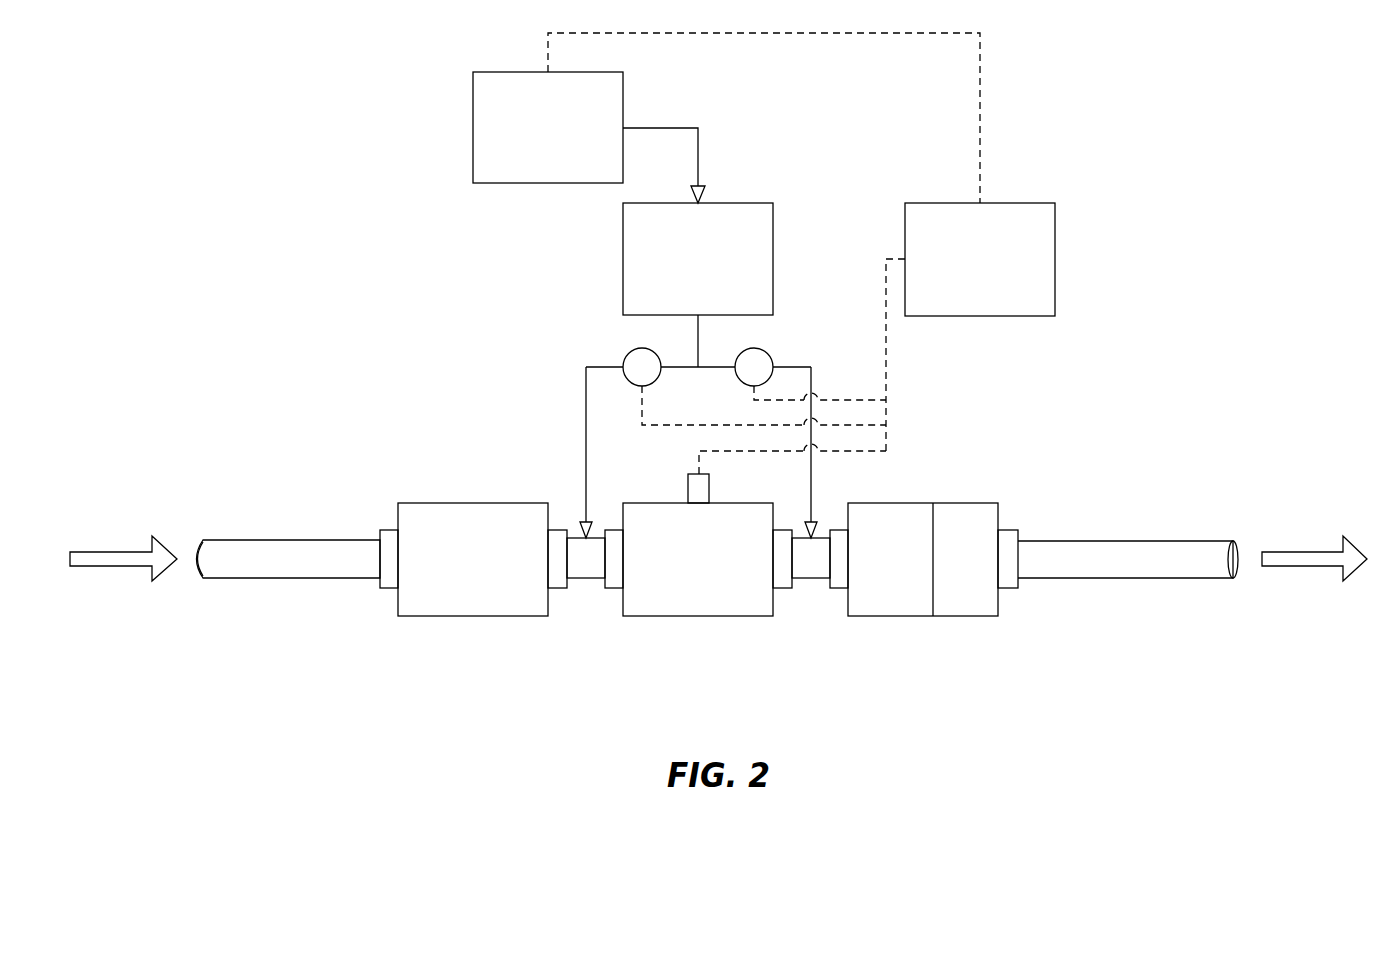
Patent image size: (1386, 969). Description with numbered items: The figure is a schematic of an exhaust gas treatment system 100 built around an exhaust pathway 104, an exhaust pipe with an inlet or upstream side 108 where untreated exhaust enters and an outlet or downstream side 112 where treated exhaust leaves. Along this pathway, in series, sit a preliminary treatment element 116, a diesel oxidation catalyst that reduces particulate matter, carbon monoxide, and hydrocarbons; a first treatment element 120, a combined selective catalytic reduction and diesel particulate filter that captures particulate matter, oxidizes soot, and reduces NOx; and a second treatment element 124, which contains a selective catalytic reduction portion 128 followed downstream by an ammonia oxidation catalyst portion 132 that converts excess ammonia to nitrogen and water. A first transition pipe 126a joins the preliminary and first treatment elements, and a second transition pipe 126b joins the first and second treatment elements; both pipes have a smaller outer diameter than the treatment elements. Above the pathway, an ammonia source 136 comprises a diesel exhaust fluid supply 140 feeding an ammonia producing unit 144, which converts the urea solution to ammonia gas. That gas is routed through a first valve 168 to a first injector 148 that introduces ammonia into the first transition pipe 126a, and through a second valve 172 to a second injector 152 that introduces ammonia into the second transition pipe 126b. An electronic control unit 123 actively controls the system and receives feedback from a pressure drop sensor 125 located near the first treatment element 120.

The exhaust gas treatment system 100 is at (412, 388).
The exhaust pathway 104 is at (290, 578).
The inlet or upstream side 108 is at (197, 540).
The outlet or downstream side 112 is at (1233, 541).
The preliminary treatment element 116 is at (475, 616).
The first treatment element 120 is at (700, 616).
The electronic control unit 123 is at (1055, 258).
The second treatment element 124 is at (933, 616).
The sensor 125 is at (688, 490).
The first transition pipe 126a is at (586, 578).
The second transition pipe 126b is at (811, 578).
The selective catalytic reduction portion 128 is at (890, 616).
The ammonia oxidation catalyst portion 132 is at (965, 616).
The ammonia source 136 is at (762, 140).
The diesel exhaust fluid supply 140 is at (548, 183).
The ammonia producing unit 144 is at (623, 260).
The first injector 148 is at (586, 515).
The second injector 152 is at (811, 515).
The first valve 168 is at (642, 348).
The second valve 172 is at (754, 348).